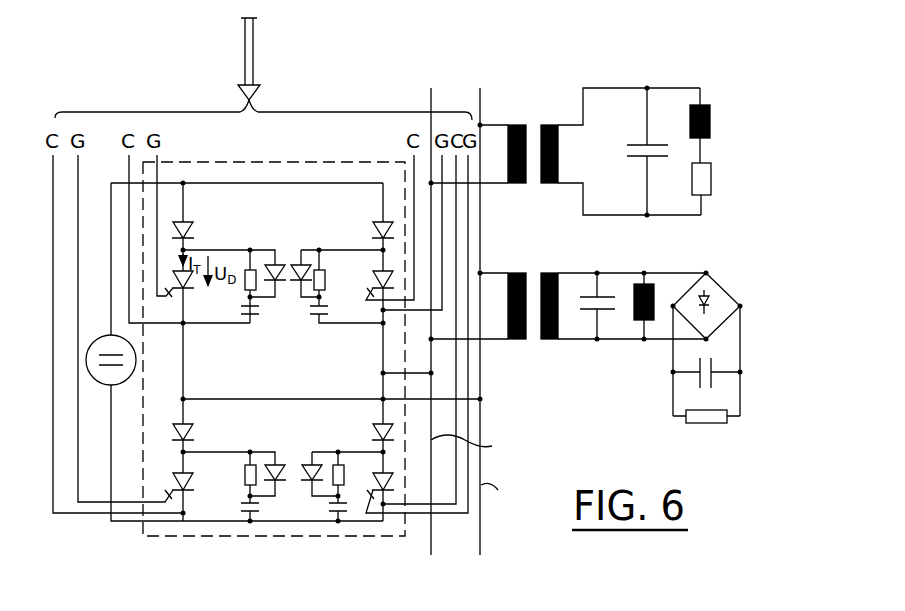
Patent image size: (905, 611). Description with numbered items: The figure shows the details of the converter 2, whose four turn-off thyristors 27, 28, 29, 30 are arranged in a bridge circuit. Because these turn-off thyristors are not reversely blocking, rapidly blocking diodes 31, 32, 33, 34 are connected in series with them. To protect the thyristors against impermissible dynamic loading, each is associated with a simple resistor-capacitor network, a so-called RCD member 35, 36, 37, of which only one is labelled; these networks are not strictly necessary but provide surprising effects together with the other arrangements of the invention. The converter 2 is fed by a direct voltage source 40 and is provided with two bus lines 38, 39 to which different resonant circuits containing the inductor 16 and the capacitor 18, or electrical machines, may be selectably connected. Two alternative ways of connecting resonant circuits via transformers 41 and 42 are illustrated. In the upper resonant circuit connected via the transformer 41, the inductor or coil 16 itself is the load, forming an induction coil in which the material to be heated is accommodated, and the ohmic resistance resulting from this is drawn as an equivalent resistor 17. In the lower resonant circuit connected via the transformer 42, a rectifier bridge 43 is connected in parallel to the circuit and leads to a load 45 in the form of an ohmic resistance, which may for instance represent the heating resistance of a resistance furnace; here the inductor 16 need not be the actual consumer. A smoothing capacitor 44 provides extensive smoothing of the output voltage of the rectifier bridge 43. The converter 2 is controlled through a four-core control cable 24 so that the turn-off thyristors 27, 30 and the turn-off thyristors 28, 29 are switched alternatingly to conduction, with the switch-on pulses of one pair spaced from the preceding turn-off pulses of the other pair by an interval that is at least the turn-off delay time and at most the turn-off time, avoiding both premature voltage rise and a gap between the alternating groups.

The converter 2 is at (289, 158).
The four-core control cable 24 is at (254, 60).
The inductor 16 is at (717, 127).
The equivalent resistor 17 is at (710, 178).
The capacitor 18 is at (627, 136).
The turn-off thyristor 27 is at (193, 293).
The turn-off thyristor 28 is at (196, 485).
The turn-off thyristor 29 is at (369, 280).
The turn-off thyristor 30 is at (373, 481).
The rapidly blocking diode 31 is at (197, 228).
The rapidly blocking diode 32 is at (198, 435).
The rapidly blocking diode 33 is at (369, 230).
The rapidly blocking diode 34 is at (369, 432).
The RCD member 35 is at (256, 320).
The RCD member 36 is at (276, 282).
The RCD member 37 is at (254, 268).
The bus line 38 is at (480, 448).
The bus line 39 is at (507, 491).
The DC voltage source 40 is at (134, 370).
The transformer 41 is at (532, 118).
The transformer 42 is at (532, 347).
The rectifier bridge 43 is at (727, 300).
The smoothing capacitor 44 is at (717, 362).
The load 45 is at (708, 427).